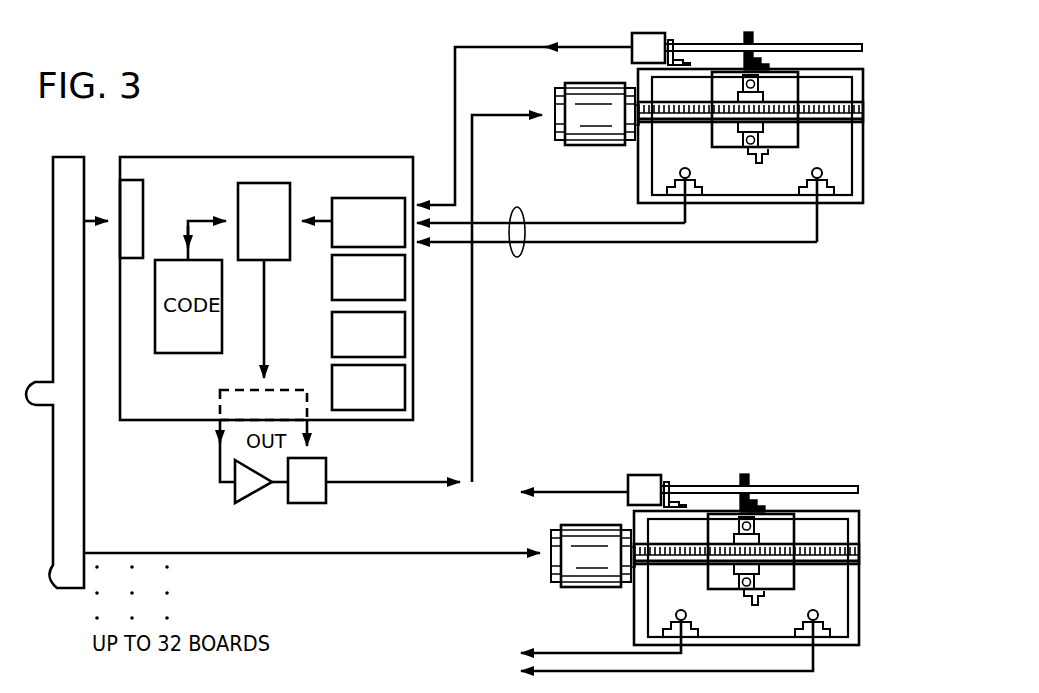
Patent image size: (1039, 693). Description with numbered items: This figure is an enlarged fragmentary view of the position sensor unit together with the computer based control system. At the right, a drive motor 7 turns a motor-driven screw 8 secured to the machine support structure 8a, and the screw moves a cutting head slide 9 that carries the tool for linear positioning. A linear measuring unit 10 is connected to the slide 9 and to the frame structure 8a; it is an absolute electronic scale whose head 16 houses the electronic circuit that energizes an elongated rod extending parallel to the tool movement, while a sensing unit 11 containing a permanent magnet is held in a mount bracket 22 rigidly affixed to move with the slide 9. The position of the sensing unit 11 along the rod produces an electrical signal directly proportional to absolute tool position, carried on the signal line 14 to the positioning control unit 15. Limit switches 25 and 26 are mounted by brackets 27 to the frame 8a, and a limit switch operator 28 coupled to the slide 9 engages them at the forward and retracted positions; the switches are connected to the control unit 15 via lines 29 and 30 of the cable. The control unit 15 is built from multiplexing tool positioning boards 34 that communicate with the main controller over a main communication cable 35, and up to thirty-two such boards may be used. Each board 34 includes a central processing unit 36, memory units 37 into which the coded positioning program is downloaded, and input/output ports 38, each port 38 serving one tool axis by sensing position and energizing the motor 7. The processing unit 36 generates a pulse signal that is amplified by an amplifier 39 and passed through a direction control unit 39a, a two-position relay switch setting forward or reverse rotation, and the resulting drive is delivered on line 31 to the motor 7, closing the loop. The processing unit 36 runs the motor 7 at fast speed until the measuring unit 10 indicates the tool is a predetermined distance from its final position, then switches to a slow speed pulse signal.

The drive motor 7 is at (558, 88).
The motor-driven screw 8 is at (690, 122).
The machine support structure 8a is at (848, 128).
The cutting head slide 9 is at (795, 148).
The linear measuring unit 10 is at (704, 40).
The sensing unit 11 is at (764, 32).
The signal line 14 is at (517, 257).
The positioning control unit 15 is at (309, 478).
The head 16 is at (645, 33).
The mount bracket 22 is at (770, 64).
The limit switch 25 is at (692, 182).
The limit switch 26 is at (830, 180).
The brackets 27 is at (818, 196).
The limit switch operator 28 is at (748, 153).
The line 29 is at (606, 222).
The line 30 is at (580, 244).
The line 31 is at (476, 428).
The multiplexing tool positioning board 34 is at (408, 343).
The main communication cable 35 is at (40, 368).
The central processing unit 36 is at (263, 183).
The memory units 37 is at (143, 185).
The input/output port 38 is at (372, 198).
The amplifier 39 is at (246, 500).
The direction control unit 39a is at (316, 504).